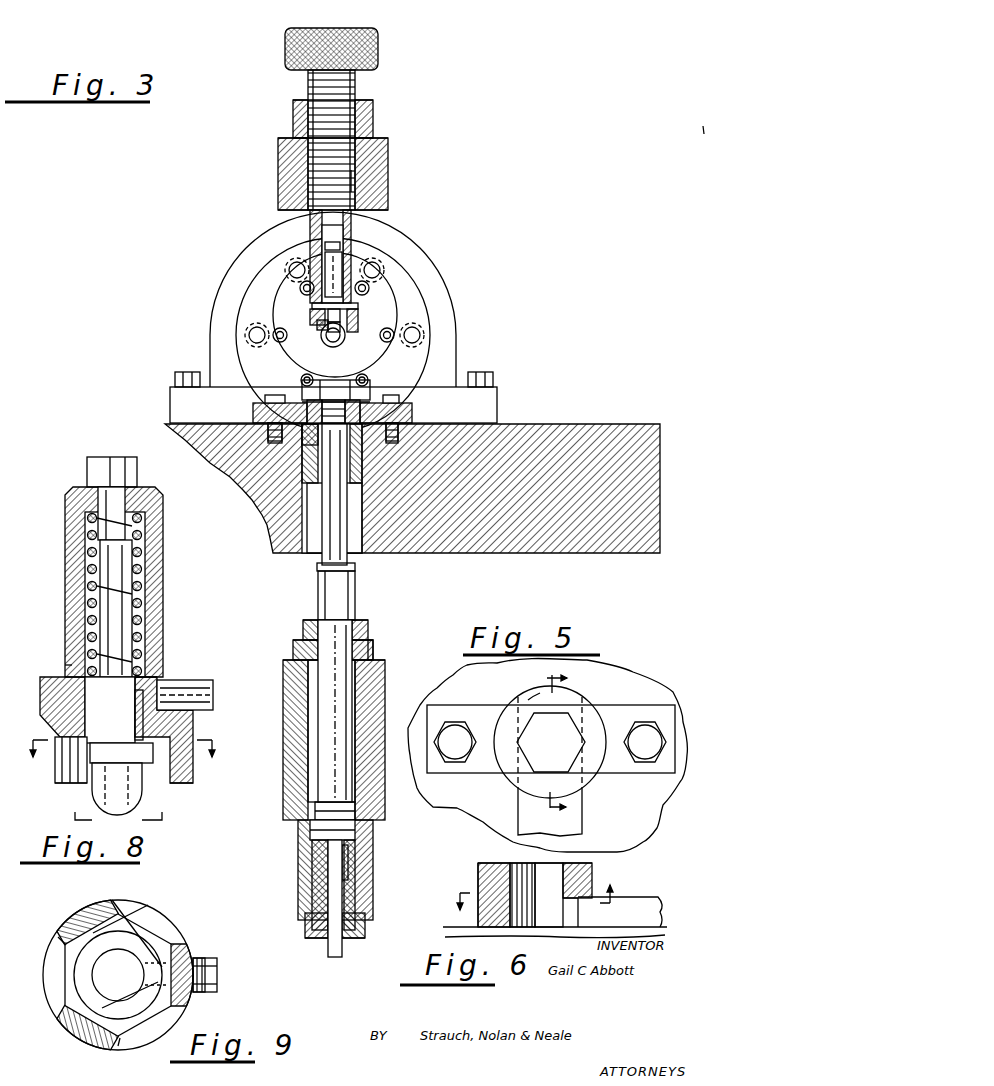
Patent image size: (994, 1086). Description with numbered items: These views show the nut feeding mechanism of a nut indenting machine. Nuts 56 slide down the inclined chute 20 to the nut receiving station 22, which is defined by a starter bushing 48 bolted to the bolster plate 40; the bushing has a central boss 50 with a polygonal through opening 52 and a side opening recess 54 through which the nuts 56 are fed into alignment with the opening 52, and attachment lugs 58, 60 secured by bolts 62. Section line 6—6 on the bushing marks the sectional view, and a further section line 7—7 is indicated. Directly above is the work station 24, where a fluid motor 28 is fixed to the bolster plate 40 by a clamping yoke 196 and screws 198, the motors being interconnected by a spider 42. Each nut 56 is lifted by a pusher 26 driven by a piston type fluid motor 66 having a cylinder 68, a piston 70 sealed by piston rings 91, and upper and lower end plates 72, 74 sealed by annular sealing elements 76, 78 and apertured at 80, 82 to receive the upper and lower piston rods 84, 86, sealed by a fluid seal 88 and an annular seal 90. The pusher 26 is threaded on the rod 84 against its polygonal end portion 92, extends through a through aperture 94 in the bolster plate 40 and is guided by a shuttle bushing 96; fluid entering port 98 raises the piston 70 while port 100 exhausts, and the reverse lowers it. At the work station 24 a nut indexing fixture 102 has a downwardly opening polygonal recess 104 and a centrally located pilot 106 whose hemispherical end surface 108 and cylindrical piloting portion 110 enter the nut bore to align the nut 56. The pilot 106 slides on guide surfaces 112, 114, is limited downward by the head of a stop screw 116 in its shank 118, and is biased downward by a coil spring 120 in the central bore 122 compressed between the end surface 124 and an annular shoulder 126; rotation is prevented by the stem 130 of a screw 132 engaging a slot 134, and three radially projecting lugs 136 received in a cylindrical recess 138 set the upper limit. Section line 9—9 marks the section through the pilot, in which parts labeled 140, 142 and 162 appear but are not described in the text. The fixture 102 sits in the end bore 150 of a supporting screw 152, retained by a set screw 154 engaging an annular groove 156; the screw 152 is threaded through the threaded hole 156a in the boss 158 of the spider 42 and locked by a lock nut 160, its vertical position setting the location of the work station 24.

In FIG. 5, the chute 20 is at (584, 827).
In FIG. 6, the chute 20 is at (652, 897).
In FIG. 3, the nut receiving station 22 is at (374, 392).
In FIG. 5, the nut receiving station 22 is at (504, 700).
In FIG. 6, the nut receiving station 22 is at (481, 860).
In FIG. 3, the work station 24 is at (362, 317).
In FIG. 8, the work station 24 is at (170, 681).
In FIG. 9, the work station 24 is at (178, 915).
In FIG. 3, the pusher 26 is at (346, 507).
In FIG. 3, the fluid motor 28 is at (430, 324).
In FIG. 3, the bolster plate 40 is at (602, 426).
In FIG. 5, the bolster plate 40 is at (655, 830).
In FIG. 6, the bolster plate 40 is at (449, 927).
In FIG. 3, the spider 42 is at (282, 161).
In FIG. 3, the starter bushing 48 is at (306, 396).
In FIG. 5, the starter bushing 48 is at (530, 699).
In FIG. 5, the central boss 50 is at (590, 710).
In FIG. 6, the central boss 50 is at (492, 864).
In FIG. 3, the through opening 52 is at (340, 386).
In FIG. 5, the through opening 52 is at (571, 726).
In FIG. 6, the through opening 52 is at (510, 888).
In FIG. 5, the side opening recess 54 is at (518, 790).
In FIG. 6, the side opening recess 54 is at (575, 930).
In FIG. 3, the nut 56 is at (304, 448).
In FIG. 3, the attachment lug 58 is at (256, 410).
In FIG. 3, the attachment lug 60 is at (413, 410).
In FIG. 3, the bolt 62 is at (269, 436).
In FIG. 3, the fluid motor 66 is at (300, 698).
In FIG. 3, the cylinder 68 is at (386, 682).
In FIG. 3, the piston 70 is at (316, 830).
In FIG. 3, the upper cylinder end plate 72 is at (370, 641).
In FIG. 3, the lower cylinder end plate 74 is at (320, 885).
In FIG. 3, the annular sealing element 76 is at (294, 650).
In FIG. 3, the annular sealing element 78 is at (305, 925).
In FIG. 3, the aperture 80 is at (375, 656).
In FIG. 3, the aperture 82 is at (350, 880).
In FIG. 3, the upper piston rod 84 is at (316, 768).
In FIG. 3, the lower piston rod 86 is at (330, 868).
In FIG. 3, the fluid seal 88 is at (356, 616).
In FIG. 3, the annular seal 90 is at (329, 950).
In FIG. 3, the piston rings 91 is at (360, 812).
In FIG. 3, the polygonal end portion 92 is at (356, 598).
In FIG. 3, the through aperture 94 is at (355, 518).
In FIG. 3, the shuttle bushing 96 is at (363, 472).
In FIG. 3, the port 98 is at (378, 840).
In FIG. 3, the port 100 is at (335, 711).
In FIG. 3, the nut indexing fixture 102 is at (356, 262).
In FIG. 8, the nut indexing fixture 102 is at (158, 640).
In FIG. 8, the polygonal recess 104 is at (70, 786).
In FIG. 9, the polygonal recess 104 is at (95, 915).
In FIG. 8, the pilot 106 is at (150, 673).
In FIG. 8, the hemispherical end surface 108 is at (118, 812).
In FIG. 9, the hemispherical end surface 108 is at (128, 958).
In FIG. 8, the cylindrical piloting portion 110 is at (143, 800).
In FIG. 8, the guide surface 112 is at (84, 700).
In FIG. 8, the guide surface 114 is at (128, 506).
In FIG. 8, the stop screw 116 is at (90, 466).
In FIG. 8, the shank 118 is at (126, 574).
In FIG. 8, the coil spring 120 is at (141, 549).
In FIG. 8, the central bore 122 is at (140, 591).
In FIG. 8, the end surface 124 is at (86, 517).
In FIG. 8, the annular shoulder 126 is at (94, 678).
In FIG. 8, the stem 130 is at (135, 712).
In FIG. 8, the screw 132 is at (213, 690).
In FIG. 8, the slot 134 is at (134, 742).
In FIG. 9, the lug 136 is at (102, 1008).
In FIG. 8, the cylindrical recess 138 is at (150, 720).
In FIG. 9, the cylindrical recess 138 is at (80, 978).
In FIG. 9, the pin 140 is at (186, 940).
In FIG. 9, the pad 142 is at (58, 937).
In FIG. 3, the end bore 150 is at (341, 241).
In FIG. 3, the supporting screw 152 is at (310, 233).
In FIG. 3, the set screw 154 is at (312, 306).
In FIG. 3, the annular groove 156 is at (338, 274).
In FIG. 8, the annular groove 156 is at (64, 662).
In FIG. 3, the threaded hole 156a is at (352, 178).
In FIG. 3, the boss 158 is at (388, 146).
In FIG. 3, the lock nut 160 is at (373, 112).
In FIG. 8, the leg 162 is at (57, 782).
In FIG. 3, the clamping yoke 196 is at (457, 332).
In FIG. 3, the screw 198 is at (183, 372).
In FIG. 5, the section line 6- 6 is at (562, 749).
In FIG. 6, the section line 7- 7 is at (536, 888).
In FIG. 8, the section line 9- 9 is at (121, 759).